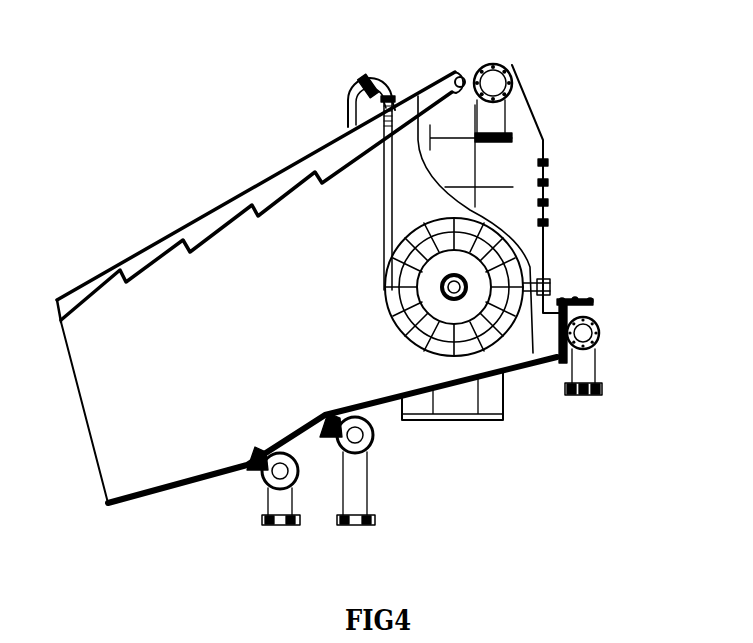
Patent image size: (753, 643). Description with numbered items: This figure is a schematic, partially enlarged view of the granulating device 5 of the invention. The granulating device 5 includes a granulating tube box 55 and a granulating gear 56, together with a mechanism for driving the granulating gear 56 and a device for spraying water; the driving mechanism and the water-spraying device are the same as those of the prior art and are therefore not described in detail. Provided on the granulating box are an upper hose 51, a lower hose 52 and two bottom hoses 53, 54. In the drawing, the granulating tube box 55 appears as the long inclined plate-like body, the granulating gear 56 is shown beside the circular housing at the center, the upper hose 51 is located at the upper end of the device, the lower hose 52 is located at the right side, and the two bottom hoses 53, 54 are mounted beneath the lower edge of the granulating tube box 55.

The granulating device 5 is at (583, 163).
The upper hose 51 is at (490, 82).
The lower hose 52 is at (583, 333).
The bottom hose 53 is at (355, 493).
The bottom hose 54 is at (280, 503).
The granulating tube box 55 is at (187, 287).
The granulating gear 56 is at (383, 282).